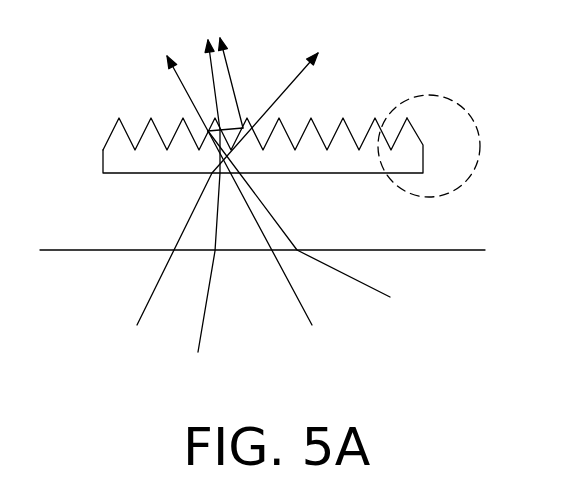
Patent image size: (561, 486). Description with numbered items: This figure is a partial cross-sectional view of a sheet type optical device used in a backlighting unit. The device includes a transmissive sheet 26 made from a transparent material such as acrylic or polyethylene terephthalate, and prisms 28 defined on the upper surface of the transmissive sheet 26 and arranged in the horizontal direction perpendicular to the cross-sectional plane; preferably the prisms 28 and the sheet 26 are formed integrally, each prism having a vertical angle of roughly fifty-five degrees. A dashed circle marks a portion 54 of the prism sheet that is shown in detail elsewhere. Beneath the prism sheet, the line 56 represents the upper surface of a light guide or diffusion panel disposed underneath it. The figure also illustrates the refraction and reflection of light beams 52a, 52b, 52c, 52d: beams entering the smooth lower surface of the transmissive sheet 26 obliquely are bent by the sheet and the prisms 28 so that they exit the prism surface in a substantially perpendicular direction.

The transmissive sheet 26 is at (360, 163).
The prisms 28 is at (315, 132).
The portion 54 is at (447, 97).
The upper surface of a light guide 56 is at (60, 250).
The light beam 52a is at (150, 295).
The light beam 52b is at (205, 323).
The light beam 52c is at (297, 297).
The light beam 52d is at (358, 287).